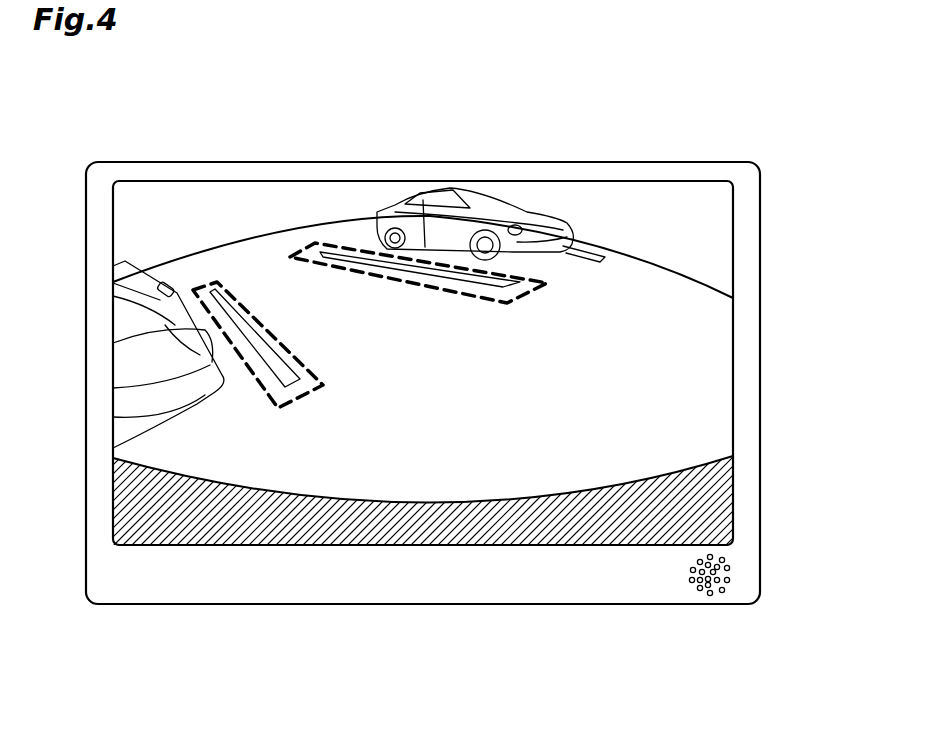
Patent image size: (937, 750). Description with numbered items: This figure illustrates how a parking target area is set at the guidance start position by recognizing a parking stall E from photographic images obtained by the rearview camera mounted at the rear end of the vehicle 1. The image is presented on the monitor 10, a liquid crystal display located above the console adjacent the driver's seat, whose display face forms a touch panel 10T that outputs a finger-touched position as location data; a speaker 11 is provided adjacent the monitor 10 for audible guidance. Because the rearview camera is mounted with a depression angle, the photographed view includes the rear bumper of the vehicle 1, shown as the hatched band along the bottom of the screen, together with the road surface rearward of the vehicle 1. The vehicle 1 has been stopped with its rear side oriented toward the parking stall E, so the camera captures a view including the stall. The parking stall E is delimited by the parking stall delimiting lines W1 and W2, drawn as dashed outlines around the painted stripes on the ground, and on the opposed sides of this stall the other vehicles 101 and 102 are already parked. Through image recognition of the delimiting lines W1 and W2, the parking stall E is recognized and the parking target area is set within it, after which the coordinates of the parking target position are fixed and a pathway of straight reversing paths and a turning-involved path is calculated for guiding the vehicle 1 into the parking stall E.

The monitor 10 is at (160, 157).
The touch panel 10T is at (733, 380).
The speaker 11 is at (738, 573).
The vehicle 1 is at (453, 532).
The other vehicle 101 is at (565, 230).
The other vehicle 102 is at (153, 408).
The parking stall delimiting line W1 is at (427, 270).
The parking stall delimiting line W2 is at (282, 370).
The parking stall E is at (275, 294).